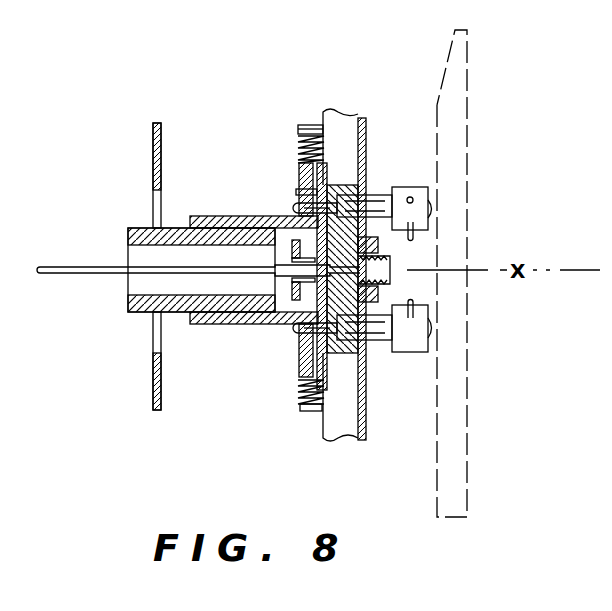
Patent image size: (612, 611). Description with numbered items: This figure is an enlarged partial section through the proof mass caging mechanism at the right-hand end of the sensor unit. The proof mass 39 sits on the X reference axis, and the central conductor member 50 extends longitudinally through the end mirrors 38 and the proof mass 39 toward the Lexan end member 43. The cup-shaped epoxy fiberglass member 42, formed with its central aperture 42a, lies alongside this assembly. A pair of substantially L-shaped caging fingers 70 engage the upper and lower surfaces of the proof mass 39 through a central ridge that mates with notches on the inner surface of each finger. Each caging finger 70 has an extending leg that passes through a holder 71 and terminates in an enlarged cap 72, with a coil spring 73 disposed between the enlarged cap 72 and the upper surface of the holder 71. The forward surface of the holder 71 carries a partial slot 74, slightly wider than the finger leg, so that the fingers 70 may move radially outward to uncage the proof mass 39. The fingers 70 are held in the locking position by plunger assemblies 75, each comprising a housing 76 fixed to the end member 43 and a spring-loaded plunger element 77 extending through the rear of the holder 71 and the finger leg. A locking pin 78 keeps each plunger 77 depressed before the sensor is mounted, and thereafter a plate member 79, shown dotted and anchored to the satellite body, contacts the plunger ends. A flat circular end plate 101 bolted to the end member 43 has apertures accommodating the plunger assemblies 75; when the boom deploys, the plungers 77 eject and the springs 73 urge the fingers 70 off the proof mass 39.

The end mirror 38 is at (290, 250).
The proof mass 39 is at (140, 228).
The cup-shaped epoxy fiberglass member 42 is at (152, 147).
The central aperture 42a is at (153, 323).
The end member 43 is at (325, 115).
The central conductor member 50 is at (92, 267).
The caging finger 70 is at (217, 216).
The holder 71 is at (299, 172).
The enlarged cap 72 is at (308, 125).
The coil spring 73 is at (324, 132).
The partial slot 74 is at (298, 193).
The plunger assembly 75 is at (412, 187).
The housing 76 is at (353, 197).
The plunger element 77 is at (292, 208).
The locking pin 78 is at (437, 290).
The plate member 79 is at (470, 62).
The end plate 101 is at (366, 136).